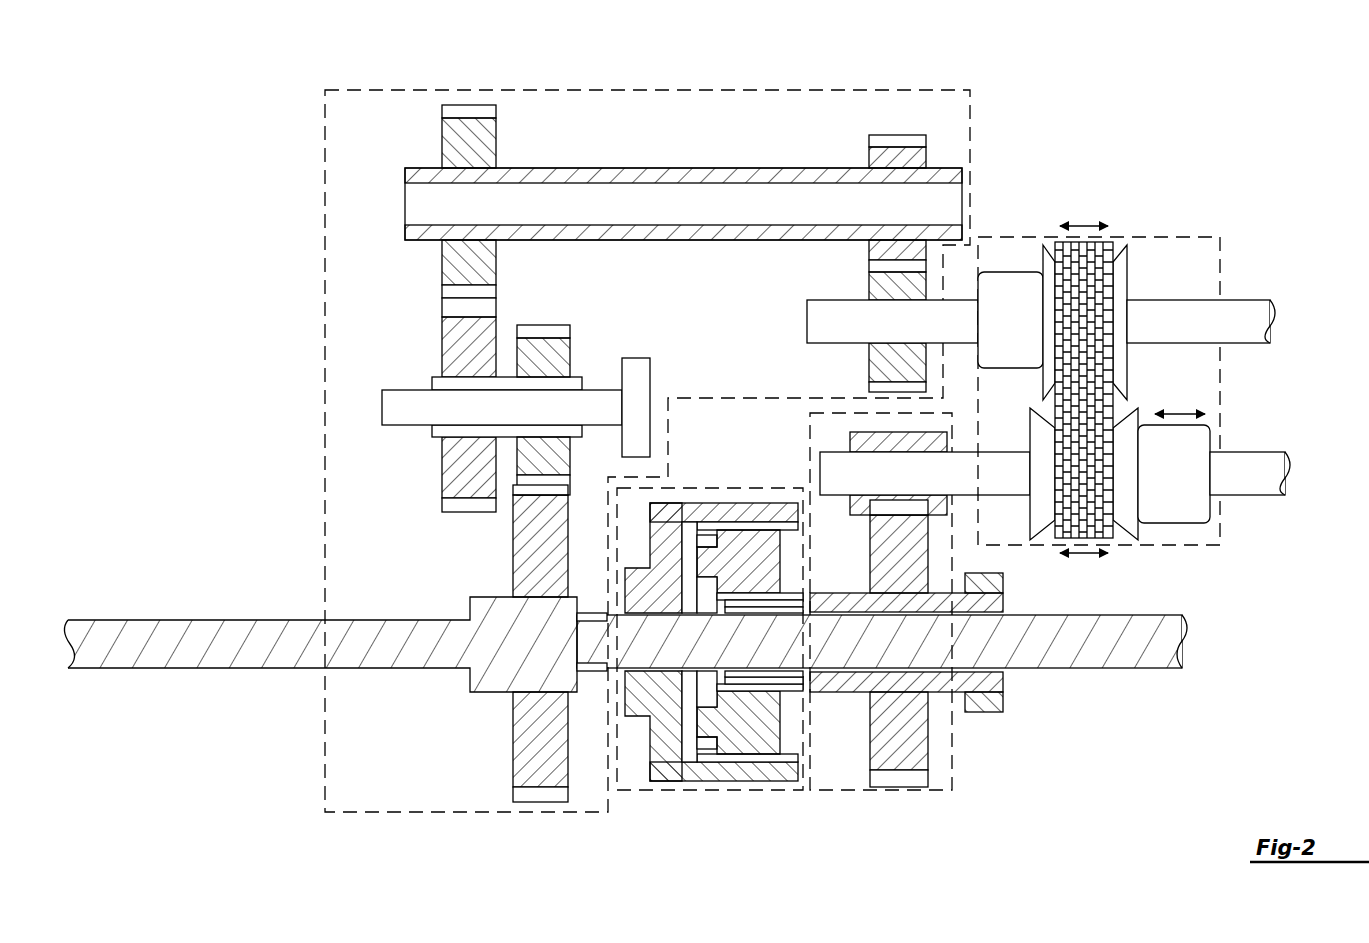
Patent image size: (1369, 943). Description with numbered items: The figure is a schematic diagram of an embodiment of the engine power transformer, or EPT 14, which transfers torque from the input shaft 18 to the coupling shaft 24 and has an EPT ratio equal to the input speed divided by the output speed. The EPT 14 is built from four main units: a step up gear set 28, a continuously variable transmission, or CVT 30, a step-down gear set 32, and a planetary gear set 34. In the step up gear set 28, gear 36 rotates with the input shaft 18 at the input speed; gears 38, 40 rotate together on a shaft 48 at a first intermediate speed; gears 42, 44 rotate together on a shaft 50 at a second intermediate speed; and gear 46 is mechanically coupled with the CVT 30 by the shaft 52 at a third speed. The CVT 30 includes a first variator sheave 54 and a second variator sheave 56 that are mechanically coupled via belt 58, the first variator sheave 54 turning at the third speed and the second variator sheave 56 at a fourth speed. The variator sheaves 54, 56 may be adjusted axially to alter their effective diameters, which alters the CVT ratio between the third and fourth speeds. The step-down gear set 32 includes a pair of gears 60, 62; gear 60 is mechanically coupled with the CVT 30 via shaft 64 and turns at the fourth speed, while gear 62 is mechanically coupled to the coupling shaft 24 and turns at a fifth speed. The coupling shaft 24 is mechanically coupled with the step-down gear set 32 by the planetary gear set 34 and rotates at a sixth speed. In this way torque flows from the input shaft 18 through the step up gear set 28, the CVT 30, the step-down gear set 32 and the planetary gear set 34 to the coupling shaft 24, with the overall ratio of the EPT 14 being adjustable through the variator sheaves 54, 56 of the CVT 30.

The engine power transformer 14 is at (1092, 70).
The input shaft 18 is at (170, 668).
The coupling shaft 24 is at (1100, 668).
The step up gear set 28 is at (700, 88).
The continuously variable transmission 30 is at (1155, 237).
The step-down gear set 32 is at (878, 796).
The planetary gear set 34 is at (726, 796).
The gear 36 is at (513, 548).
The gear 38 is at (570, 348).
The gear 40 is at (442, 474).
The gear 42 is at (496, 262).
The gear 44 is at (870, 153).
The gear 46 is at (926, 353).
The shaft 48 is at (386, 392).
The shaft 50 is at (712, 168).
The shaft 52 is at (812, 300).
The first variator sheave 54 is at (1127, 260).
The second variator sheave 56 is at (1160, 530).
The belt 58 is at (1115, 405).
The gear 60 is at (950, 436).
The gear 62 is at (870, 532).
The shaft 64 is at (1020, 495).